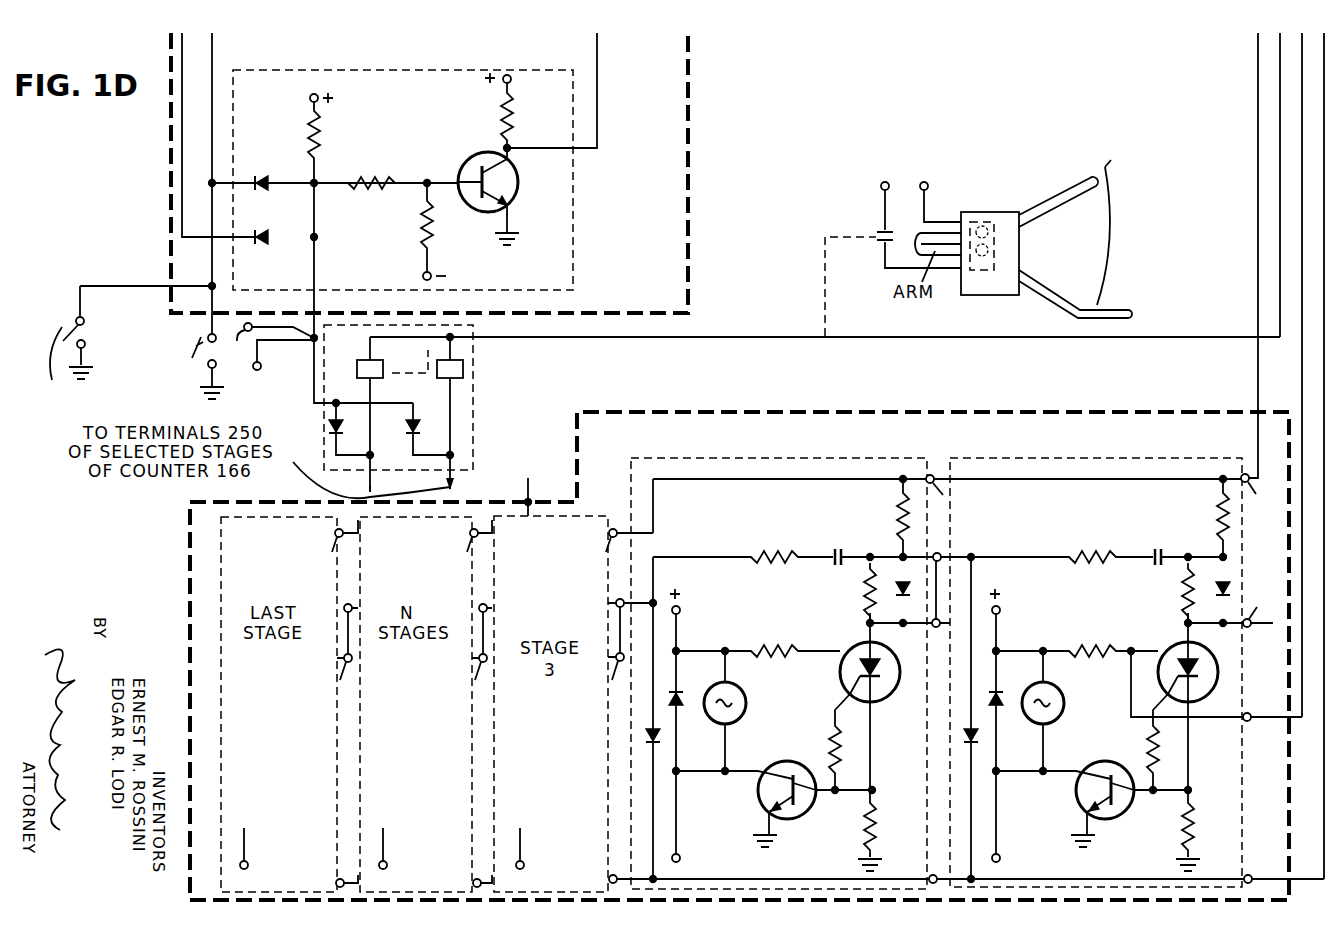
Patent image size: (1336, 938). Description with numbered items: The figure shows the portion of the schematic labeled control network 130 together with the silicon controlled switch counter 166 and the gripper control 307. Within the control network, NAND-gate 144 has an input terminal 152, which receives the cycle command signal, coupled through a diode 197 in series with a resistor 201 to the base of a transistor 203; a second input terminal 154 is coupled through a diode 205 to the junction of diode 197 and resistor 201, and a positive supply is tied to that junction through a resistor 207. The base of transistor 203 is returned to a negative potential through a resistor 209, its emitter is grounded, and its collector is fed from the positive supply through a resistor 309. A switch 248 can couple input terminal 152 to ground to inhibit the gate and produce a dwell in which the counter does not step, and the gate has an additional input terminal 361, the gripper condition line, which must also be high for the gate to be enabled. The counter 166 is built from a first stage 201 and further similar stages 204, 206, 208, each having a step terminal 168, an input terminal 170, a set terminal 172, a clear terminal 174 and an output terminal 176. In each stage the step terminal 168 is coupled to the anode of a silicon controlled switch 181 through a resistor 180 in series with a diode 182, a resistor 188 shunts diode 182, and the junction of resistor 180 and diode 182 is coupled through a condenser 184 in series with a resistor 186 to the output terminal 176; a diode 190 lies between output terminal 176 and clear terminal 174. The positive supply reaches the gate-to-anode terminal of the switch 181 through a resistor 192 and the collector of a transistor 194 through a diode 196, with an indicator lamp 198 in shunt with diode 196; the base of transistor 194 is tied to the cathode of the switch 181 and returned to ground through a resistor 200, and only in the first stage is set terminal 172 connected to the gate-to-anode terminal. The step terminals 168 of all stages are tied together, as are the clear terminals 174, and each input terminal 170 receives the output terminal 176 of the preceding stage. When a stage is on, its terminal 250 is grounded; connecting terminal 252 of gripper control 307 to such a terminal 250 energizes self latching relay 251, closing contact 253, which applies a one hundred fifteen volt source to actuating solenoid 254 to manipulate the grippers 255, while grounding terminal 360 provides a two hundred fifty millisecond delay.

The control network 130 is at (692, 128).
The NAND-gate 144 is at (576, 183).
The input terminal 152 is at (214, 181).
The input terminal 154 is at (181, 240).
The diode 197 is at (262, 179).
The diode 205 is at (263, 231).
The resistor 207 is at (318, 142).
The resistor / first counter stage 201 is at (358, 182).
The resistor 209 is at (433, 226).
The resistor 309 is at (512, 113).
The transistor 203 is at (479, 158).
The switch 248 is at (197, 361).
The input terminal 361 is at (226, 291).
The terminal 360 is at (261, 367).
The gripper control 307 is at (478, 407).
The self latching relay 251 is at (386, 371).
The terminal 252 is at (371, 471).
The contact 253 is at (877, 235).
The actuating solenoid 254 is at (988, 290).
The grippers 255 is at (1059, 231).
The counter 166 is at (739, 637).
The stage 208 is at (219, 540).
The stage 206 is at (534, 486).
The stage 204 is at (824, 455).
The resistor 180 is at (898, 505).
The resistor 186 is at (768, 553).
The condenser 184 is at (836, 550).
The diode 182 is at (901, 582).
The resistor 188 is at (866, 588).
The silicon controlled switch 181 is at (858, 650).
The resistor 192 is at (774, 645).
The diode 196 is at (683, 696).
The indicator lamp 198 is at (747, 696).
The diode 190 is at (661, 740).
The transistor 194 is at (758, 801).
The resistor 200 is at (877, 823).
The set terminal 172 is at (1249, 713).
The step terminal 168 is at (331, 553).
The output terminal 176 is at (352, 604).
The input terminal 170 is at (340, 681).
The clear terminal 174 is at (342, 878).
The terminal 250 is at (248, 865).